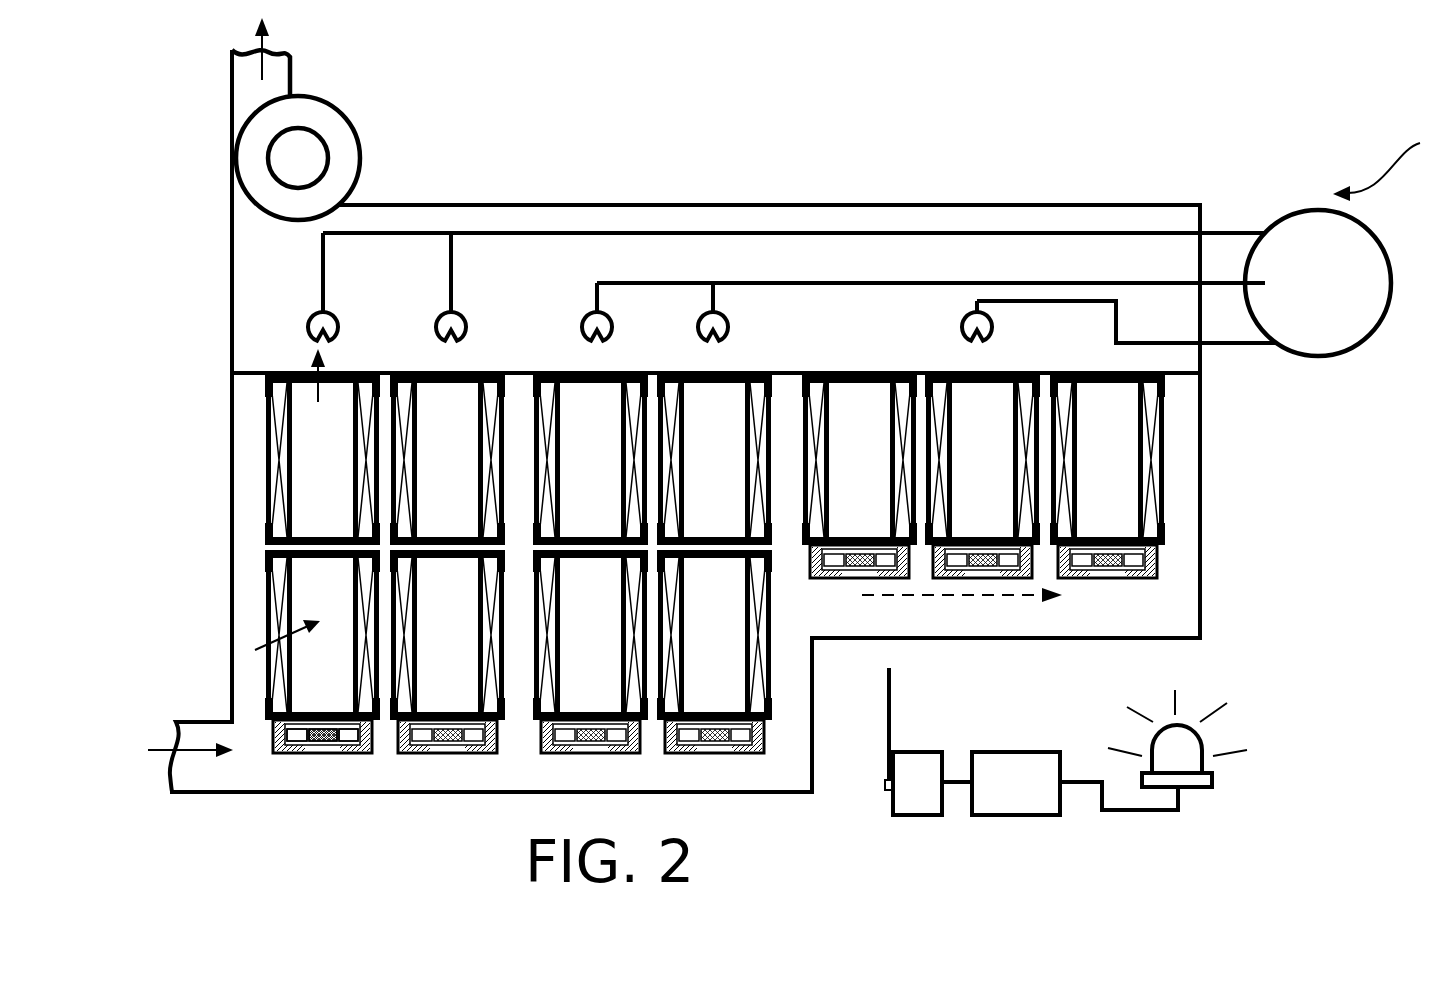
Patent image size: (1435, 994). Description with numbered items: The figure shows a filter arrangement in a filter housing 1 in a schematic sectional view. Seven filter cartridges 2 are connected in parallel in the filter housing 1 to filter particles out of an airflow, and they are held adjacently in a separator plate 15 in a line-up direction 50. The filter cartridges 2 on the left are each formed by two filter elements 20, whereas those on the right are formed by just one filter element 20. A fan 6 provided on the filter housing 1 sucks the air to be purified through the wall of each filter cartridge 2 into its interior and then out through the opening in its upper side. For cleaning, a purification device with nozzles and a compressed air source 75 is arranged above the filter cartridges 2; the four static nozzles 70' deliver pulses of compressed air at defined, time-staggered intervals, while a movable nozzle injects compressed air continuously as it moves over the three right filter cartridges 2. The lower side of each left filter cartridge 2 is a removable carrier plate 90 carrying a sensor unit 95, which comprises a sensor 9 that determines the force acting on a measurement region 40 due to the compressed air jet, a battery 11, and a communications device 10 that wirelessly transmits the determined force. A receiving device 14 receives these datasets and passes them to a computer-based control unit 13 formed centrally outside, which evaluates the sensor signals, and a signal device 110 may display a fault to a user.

The filter housing 1 is at (192, 292).
The filter cartridge 2 is at (435, 421).
The fan 6 is at (262, 192).
The sensor 9 is at (315, 752).
The communications device 10 is at (292, 752).
The battery 11 is at (350, 752).
The control unit 13 is at (1022, 798).
The receiving device 14 is at (918, 798).
The separator plate 15 is at (1205, 373).
The filter element 20 is at (318, 482).
The measurement region 40 is at (320, 713).
The line-up direction 50 is at (962, 607).
The static nozzle 70' is at (655, 231).
The compressed air source 75 is at (1302, 267).
The carrier plate 90 is at (298, 752).
The sensor unit 95 is at (382, 786).
The signal device 110 is at (1213, 782).